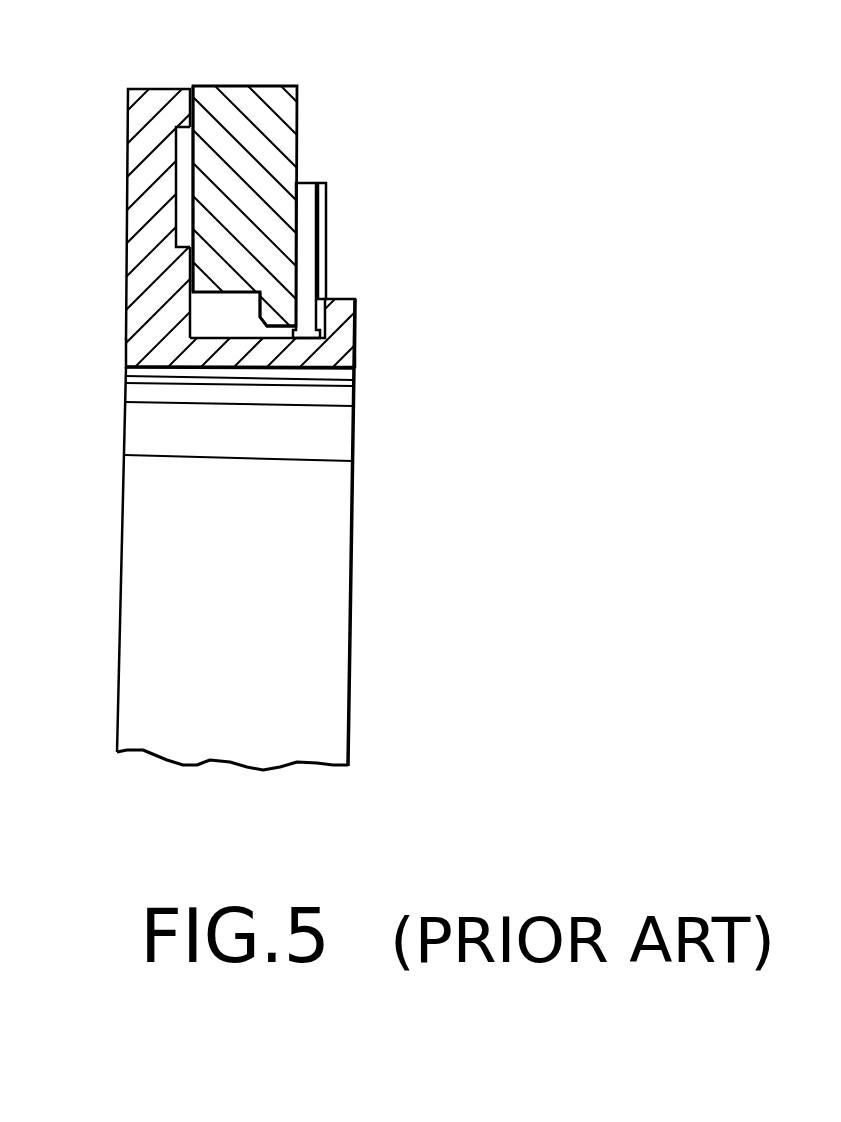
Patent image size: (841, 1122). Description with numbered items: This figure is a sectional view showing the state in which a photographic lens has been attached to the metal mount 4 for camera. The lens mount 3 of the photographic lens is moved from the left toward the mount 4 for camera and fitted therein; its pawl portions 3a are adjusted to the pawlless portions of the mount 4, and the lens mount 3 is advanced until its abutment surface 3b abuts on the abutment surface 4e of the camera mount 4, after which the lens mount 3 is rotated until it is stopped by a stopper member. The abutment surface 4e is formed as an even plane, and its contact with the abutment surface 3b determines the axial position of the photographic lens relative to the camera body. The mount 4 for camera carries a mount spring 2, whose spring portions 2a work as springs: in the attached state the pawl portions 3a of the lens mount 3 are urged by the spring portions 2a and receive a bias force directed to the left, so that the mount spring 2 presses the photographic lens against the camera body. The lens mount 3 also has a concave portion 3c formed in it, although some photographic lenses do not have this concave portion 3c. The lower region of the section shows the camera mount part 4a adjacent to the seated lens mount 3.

The mount spring 2 is at (307, 181).
The spring portions 2a is at (328, 220).
The lens mount 3 is at (366, 385).
The pawl portions 3a is at (340, 326).
The abutment surface 3b is at (172, 92).
The concave portion 3c is at (176, 193).
The mount for camera 4 is at (265, 87).
The chamfered lower portion of block 4a is at (277, 318).
The abutment surface 4e is at (193, 155).